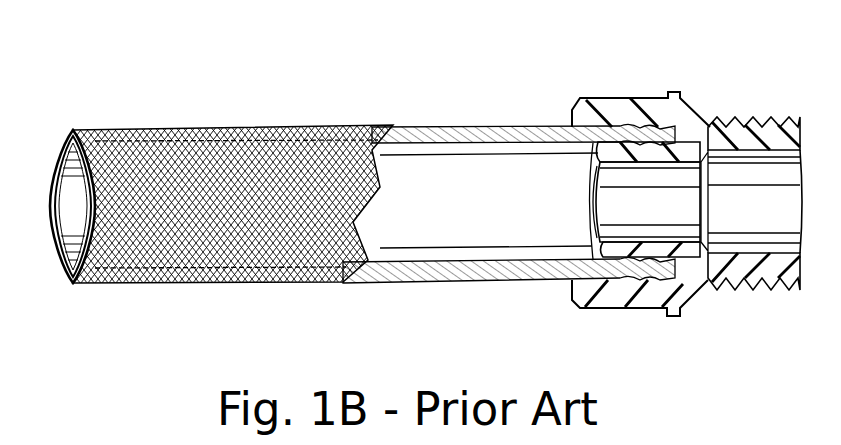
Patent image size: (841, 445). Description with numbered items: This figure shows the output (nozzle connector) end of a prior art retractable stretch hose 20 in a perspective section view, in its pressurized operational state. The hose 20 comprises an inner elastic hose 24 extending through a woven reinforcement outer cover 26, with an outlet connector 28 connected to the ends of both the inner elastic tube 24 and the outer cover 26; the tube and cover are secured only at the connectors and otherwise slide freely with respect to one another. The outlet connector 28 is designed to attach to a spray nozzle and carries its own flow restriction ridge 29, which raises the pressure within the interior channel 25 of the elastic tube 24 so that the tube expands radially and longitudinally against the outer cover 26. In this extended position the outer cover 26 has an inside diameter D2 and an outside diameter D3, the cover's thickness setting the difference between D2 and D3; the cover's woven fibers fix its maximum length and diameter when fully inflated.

The retractable stretch hose 20 is at (466, 109).
The inner elastic hose 24 is at (57, 168).
The interior channel 25 is at (428, 143).
The woven reinforcement outer cover 26 is at (76, 162).
The outlet connector 28 is at (748, 273).
The flow restriction ridge 29 is at (590, 216).
The inside diameter D2 is at (158, 320).
The outside diameter D3 is at (216, 320).